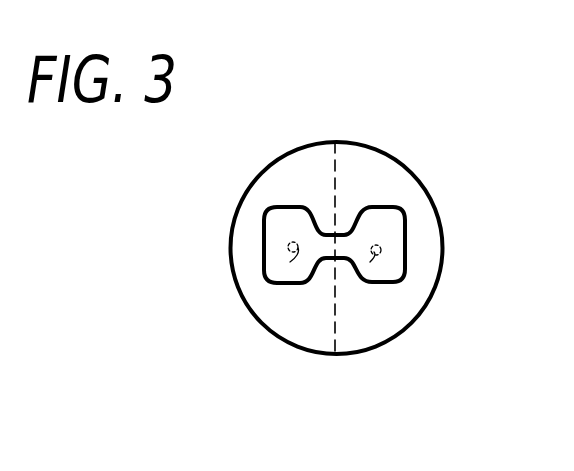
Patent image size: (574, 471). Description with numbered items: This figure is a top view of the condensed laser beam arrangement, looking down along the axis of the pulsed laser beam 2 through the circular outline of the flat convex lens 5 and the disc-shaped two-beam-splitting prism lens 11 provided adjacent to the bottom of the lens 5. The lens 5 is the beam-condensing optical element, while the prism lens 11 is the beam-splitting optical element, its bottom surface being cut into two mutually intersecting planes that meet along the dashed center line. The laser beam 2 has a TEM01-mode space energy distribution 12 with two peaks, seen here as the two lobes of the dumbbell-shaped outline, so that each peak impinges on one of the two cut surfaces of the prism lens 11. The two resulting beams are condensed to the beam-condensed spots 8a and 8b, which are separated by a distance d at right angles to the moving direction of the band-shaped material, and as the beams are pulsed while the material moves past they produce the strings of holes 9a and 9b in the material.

The laser beam 2 is at (382, 215).
The lens 5 is at (444, 224).
The prism lens 11 is at (360, 248).
The space energy distribution 12 is at (280, 207).
The beam-condensed spot 8a is at (297, 256).
The beam-condensed spot 8b is at (372, 256).
The hole 9a is at (288, 246).
The hole 9b is at (378, 247).